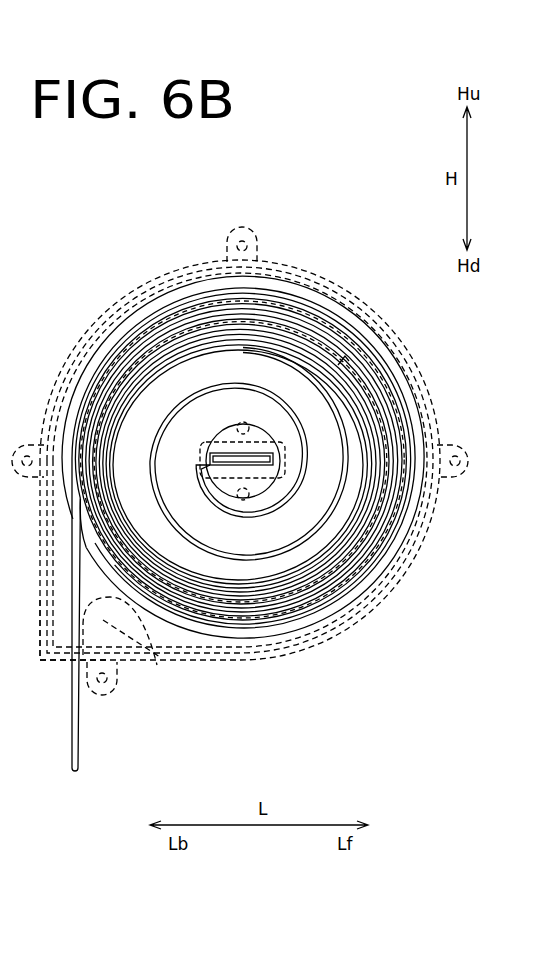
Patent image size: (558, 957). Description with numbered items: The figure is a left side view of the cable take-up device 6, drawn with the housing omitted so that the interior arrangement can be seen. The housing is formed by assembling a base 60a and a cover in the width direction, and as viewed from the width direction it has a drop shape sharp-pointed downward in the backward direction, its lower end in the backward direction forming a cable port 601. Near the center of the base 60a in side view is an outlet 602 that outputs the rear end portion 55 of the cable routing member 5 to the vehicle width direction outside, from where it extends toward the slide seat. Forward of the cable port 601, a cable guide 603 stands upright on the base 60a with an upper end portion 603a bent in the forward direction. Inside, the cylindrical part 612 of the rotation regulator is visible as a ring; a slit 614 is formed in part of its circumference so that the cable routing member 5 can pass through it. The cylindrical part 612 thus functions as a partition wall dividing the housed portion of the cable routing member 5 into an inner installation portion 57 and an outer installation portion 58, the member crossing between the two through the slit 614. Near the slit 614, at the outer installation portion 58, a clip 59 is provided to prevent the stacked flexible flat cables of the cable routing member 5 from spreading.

The cable take-up device 6 is at (120, 268).
The base 60a is at (325, 275).
The cable port 601 is at (58, 668).
The cable guide 603 is at (118, 682).
The upper end portion 603a is at (156, 652).
The cable routing member 5 is at (80, 762).
The rear end portion 55 is at (273, 466).
The inner installation portion 57 is at (294, 580).
The outer installation portion 58 is at (337, 597).
The clip 59 is at (353, 373).
The cylindrical part 612 is at (357, 550).
The slit 614 is at (342, 360).
The outlet 602 is at (285, 460).